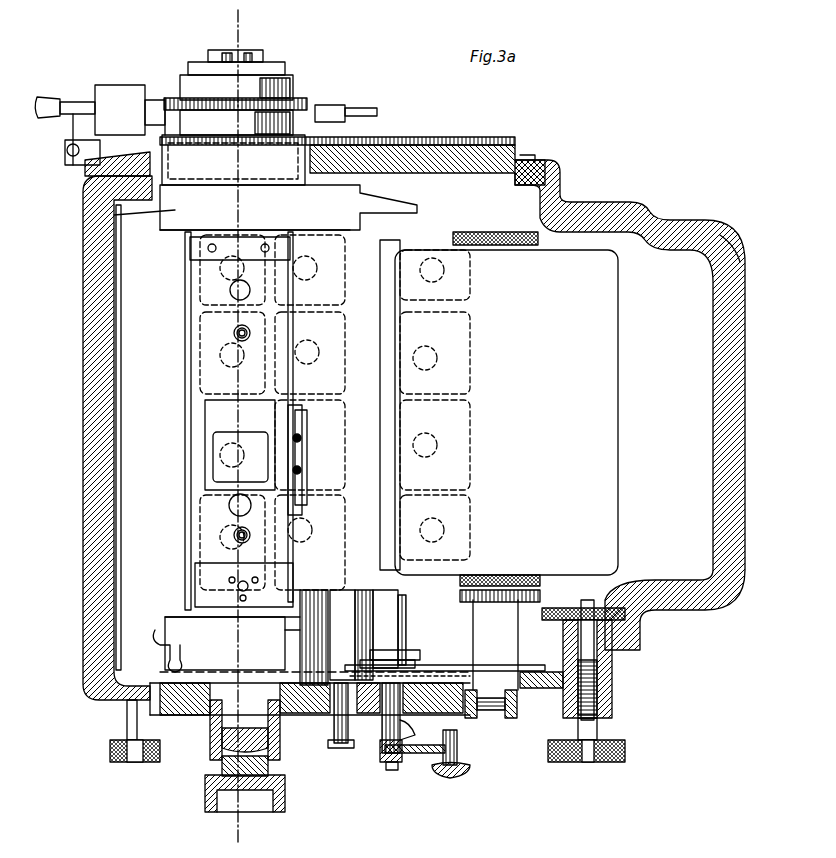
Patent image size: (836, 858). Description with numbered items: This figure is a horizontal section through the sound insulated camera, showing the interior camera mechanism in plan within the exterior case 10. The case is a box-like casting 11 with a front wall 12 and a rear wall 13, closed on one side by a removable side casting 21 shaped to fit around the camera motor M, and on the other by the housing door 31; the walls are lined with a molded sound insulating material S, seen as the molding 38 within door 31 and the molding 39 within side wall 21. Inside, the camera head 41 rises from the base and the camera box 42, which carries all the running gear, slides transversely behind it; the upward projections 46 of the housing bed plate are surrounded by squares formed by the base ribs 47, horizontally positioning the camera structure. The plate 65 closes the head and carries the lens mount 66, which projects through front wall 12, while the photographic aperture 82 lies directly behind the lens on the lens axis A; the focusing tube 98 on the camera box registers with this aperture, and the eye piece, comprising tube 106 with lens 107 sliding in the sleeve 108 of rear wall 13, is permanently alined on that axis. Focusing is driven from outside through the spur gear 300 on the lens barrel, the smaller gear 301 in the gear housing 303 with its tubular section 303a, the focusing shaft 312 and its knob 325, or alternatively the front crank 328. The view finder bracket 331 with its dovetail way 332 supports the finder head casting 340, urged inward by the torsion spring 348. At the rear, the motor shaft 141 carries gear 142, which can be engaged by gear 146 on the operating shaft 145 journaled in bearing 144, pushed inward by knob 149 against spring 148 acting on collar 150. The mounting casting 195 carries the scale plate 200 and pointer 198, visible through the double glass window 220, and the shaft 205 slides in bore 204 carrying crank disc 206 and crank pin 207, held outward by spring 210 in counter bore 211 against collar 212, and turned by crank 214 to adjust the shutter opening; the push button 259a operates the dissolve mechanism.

The lens axis A is at (240, 20).
The exterior case 10 is at (538, 140).
The box-like casting 11 is at (452, 145).
The front wall 12 is at (375, 140).
The rear wall 13 is at (190, 718).
The removable side casting 21 is at (668, 213).
The housing door 31 is at (80, 368).
The insulation molding 38 is at (90, 320).
The insulation molding 39 is at (728, 243).
The head portion 41 is at (112, 215).
The camera box 42 is at (400, 140).
The projections 46 is at (232, 368).
The ribs 47 is at (278, 348).
The plate 65 is at (294, 196).
The lens mount 66 is at (292, 93).
The photographic aperture 82 is at (232, 220).
The focusing tube 98 is at (135, 420).
The eye piece tube 106 is at (212, 785).
The eye piece lens 107 is at (280, 770).
The supporting sleeve 108 is at (210, 760).
The motor shaft 141 is at (510, 600).
The gear 142 is at (542, 592).
The bearing 144 is at (610, 686).
The motor operating shaft 145 is at (592, 670).
The gear 146 is at (630, 620).
The coil spring 148 is at (600, 698).
The operating knob 149 is at (630, 748).
The collar 150 is at (600, 726).
The mounting casting 195 is at (405, 605).
The pointer 198 is at (428, 674).
The plate 200 is at (450, 665).
The bore 204 is at (375, 765).
The shaft 205 is at (378, 750).
The crank disc 206 is at (392, 650).
The crank pin 207 is at (398, 660).
The coil spring 210 is at (412, 726).
The counter bore 211 is at (410, 755).
The collar 212 is at (392, 765).
The manual operating crank 214 is at (455, 778).
The window 220 is at (487, 712).
The push button 259a is at (356, 745).
The spur gear 300 is at (305, 102).
The spur gear 301 is at (265, 58).
The gear housing 303 is at (118, 100).
The tubular section 303a is at (158, 95).
The focusing shaft 312 is at (130, 707).
The manual operating knob 325 is at (132, 752).
The manual crank 328 is at (44, 97).
The view finder carrying bracket 331 is at (100, 172).
The dovetail way 332 is at (70, 162).
The finder head casting 340 is at (335, 650).
The coil torsion spring 348 is at (333, 665).
The camera motor M is at (603, 392).
The sound insulating material S is at (92, 485).